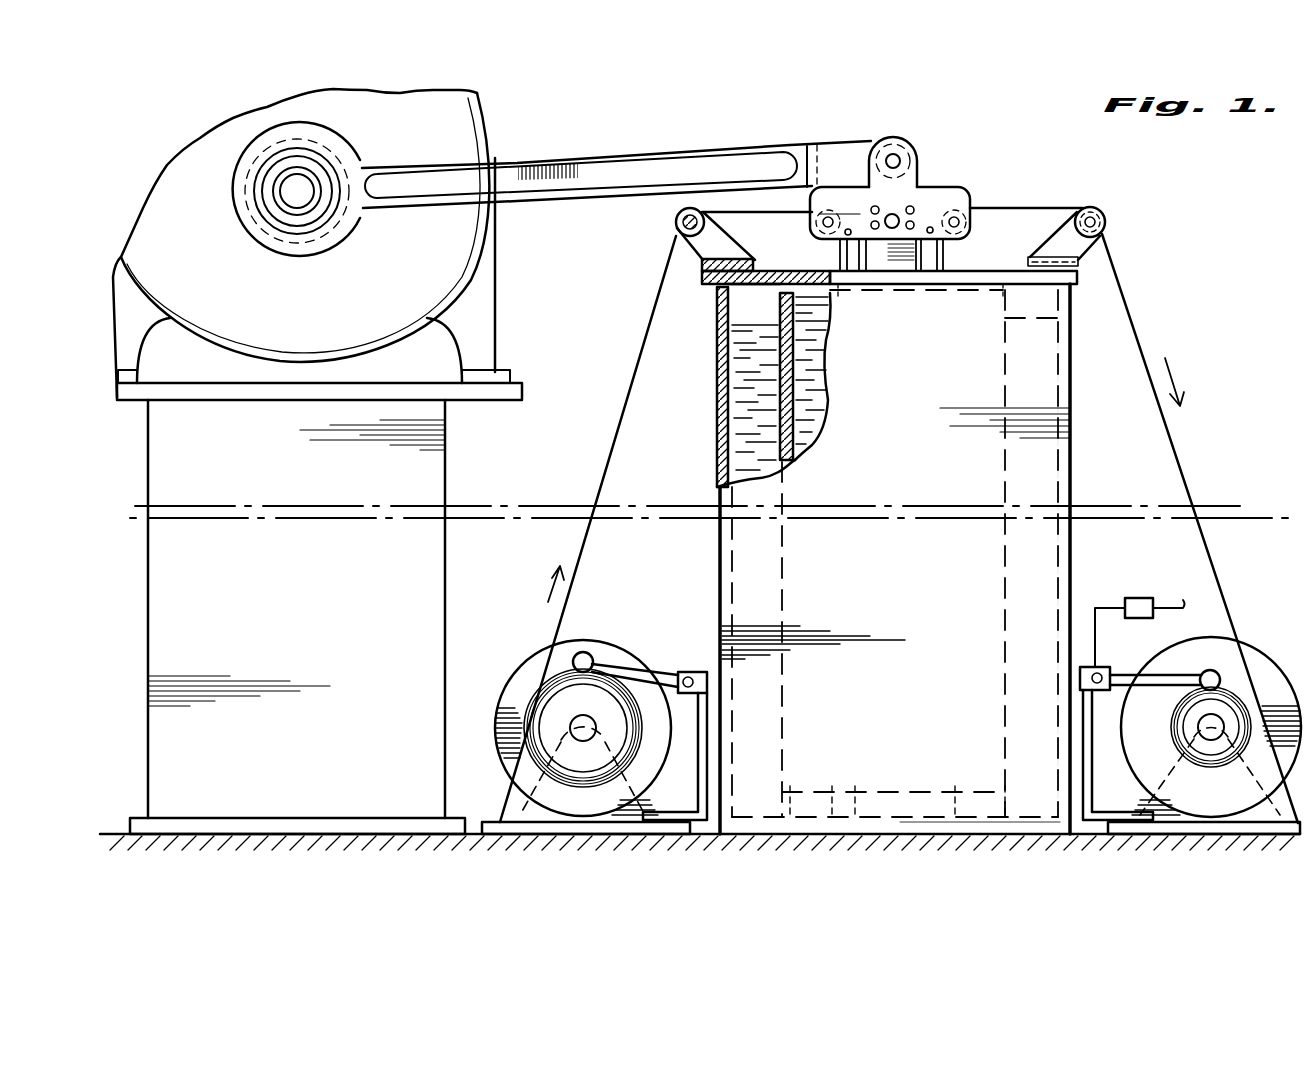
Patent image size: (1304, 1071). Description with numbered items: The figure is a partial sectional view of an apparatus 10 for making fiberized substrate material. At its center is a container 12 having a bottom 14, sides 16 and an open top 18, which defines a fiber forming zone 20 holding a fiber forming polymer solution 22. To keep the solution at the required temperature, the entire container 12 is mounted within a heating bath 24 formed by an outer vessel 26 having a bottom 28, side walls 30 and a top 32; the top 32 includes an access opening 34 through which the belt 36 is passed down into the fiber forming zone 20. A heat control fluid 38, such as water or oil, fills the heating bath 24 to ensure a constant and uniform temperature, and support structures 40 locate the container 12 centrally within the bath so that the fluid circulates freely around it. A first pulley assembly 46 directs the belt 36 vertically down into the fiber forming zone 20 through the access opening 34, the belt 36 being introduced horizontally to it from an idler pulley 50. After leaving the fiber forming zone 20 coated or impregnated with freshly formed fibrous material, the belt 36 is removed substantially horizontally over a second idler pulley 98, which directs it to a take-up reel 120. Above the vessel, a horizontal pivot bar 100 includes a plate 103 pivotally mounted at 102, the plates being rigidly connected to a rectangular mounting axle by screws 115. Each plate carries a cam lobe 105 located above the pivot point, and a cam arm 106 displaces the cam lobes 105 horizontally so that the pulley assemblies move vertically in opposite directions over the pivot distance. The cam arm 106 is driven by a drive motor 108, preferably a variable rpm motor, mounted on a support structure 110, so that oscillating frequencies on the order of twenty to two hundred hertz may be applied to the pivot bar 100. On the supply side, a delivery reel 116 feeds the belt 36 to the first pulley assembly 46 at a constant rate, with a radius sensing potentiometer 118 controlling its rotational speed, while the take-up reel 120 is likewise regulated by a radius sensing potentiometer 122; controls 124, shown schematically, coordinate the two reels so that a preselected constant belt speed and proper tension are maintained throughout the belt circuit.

The apparatus 10 is at (1100, 185).
The container 12 is at (778, 392).
The bottom 14 is at (856, 792).
The sides 16 is at (1005, 492).
The open top 18 is at (982, 286).
The fiber forming zone 20 is at (812, 415).
The fiber forming polymer solution 22 is at (812, 352).
The heating bath 24 is at (1070, 412).
The outer vessel 26 is at (718, 566).
The bottom 28 is at (912, 810).
The side walls 30 is at (718, 466).
The top 32 is at (968, 276).
The access opening 34 is at (826, 274).
The belt 36 is at (632, 360).
The heat control fluid 38 is at (754, 347).
The support structures 40 is at (812, 798).
The first pulley assembly 46 is at (812, 220).
The idler pulley 50 is at (674, 224).
The second idler pulley 98 is at (1107, 220).
The horizontal pivot bar 100 is at (962, 170).
The pivot mounting 102 is at (893, 229).
The pivot bar plate 103 is at (965, 193).
The cam lobe 105 is at (890, 135).
The cam arm 106 is at (578, 162).
The drive motor 108 is at (192, 160).
The support structure 110 is at (415, 468).
The screws 115 is at (912, 205).
The delivery reel 116 is at (510, 695).
The radius sensing potentiometer 118 is at (686, 668).
The take-up reel 120 is at (1262, 652).
The radius sensing potentiometer 122 is at (1115, 678).
The controls 124 is at (1136, 598).